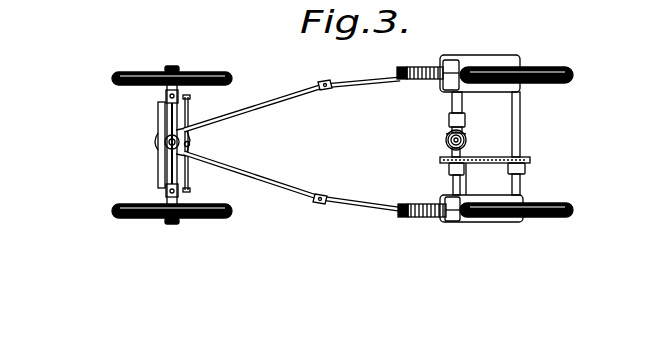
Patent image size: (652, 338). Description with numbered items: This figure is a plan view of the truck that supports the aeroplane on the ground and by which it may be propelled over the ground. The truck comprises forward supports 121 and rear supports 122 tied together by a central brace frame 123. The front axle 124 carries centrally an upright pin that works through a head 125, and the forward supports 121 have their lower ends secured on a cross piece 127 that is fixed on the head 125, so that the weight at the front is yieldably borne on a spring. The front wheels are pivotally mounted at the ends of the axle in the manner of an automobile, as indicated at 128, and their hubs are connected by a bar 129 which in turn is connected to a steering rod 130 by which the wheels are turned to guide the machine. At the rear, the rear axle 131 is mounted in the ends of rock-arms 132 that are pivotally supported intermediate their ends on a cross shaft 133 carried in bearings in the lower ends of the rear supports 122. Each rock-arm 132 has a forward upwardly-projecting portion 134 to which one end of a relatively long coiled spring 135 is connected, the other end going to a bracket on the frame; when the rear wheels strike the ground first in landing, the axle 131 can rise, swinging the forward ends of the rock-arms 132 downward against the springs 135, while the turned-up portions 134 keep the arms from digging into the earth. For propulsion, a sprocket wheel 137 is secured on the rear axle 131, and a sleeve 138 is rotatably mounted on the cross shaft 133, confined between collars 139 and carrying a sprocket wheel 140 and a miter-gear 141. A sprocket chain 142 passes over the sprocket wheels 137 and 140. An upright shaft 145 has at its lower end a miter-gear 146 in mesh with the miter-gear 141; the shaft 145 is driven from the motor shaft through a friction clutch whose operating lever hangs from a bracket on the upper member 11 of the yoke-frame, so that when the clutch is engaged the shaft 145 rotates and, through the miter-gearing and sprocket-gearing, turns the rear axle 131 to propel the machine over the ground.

The upper member of the yoke-frame 11 is at (580, 8).
The forward supports 121 is at (158, 102).
The rear supports 122 is at (442, 85).
The central brace frame 123 is at (336, 86).
The front axle 124 is at (180, 172).
The head 125 is at (186, 131).
The cross piece 127 is at (158, 118).
The front wheel pivotal mounting 128 is at (178, 92).
The bar 129 is at (189, 96).
The steering rod 130 is at (190, 146).
The rear axle 131 is at (521, 121).
The rock-arms 132 is at (493, 67).
The cross shaft 133 is at (462, 103).
The forward upwardly-projecting portion 134 is at (403, 67).
The coiled spring 135 is at (430, 67).
The sprocket wheel 137 is at (526, 165).
The sleeve 138 is at (466, 148).
The collars 139 is at (452, 168).
The sprocket wheel 140 is at (440, 158).
The miter-gear 141 is at (447, 135).
The sprocket chain 142 is at (488, 163).
The upright shaft 145 is at (463, 140).
The miter-gear 146 is at (446, 139).